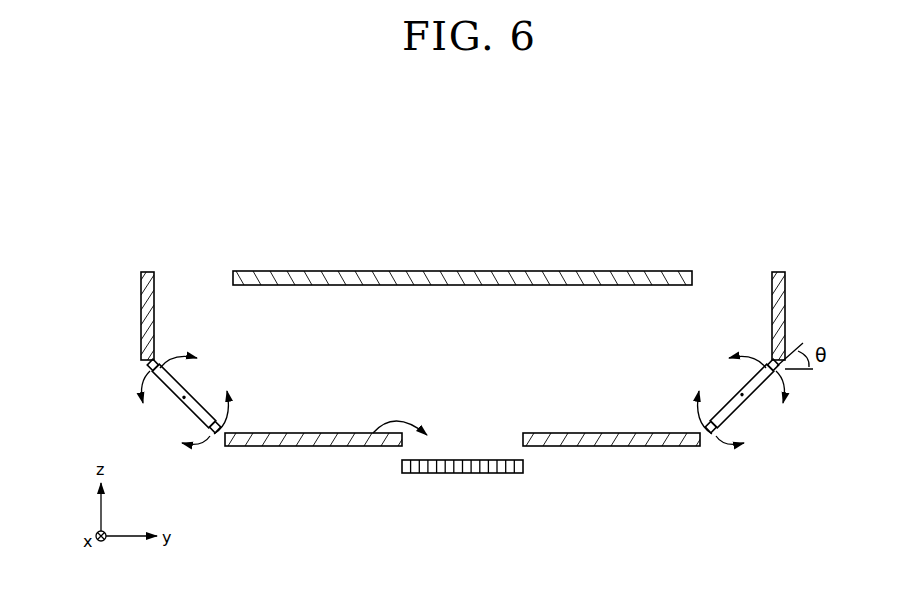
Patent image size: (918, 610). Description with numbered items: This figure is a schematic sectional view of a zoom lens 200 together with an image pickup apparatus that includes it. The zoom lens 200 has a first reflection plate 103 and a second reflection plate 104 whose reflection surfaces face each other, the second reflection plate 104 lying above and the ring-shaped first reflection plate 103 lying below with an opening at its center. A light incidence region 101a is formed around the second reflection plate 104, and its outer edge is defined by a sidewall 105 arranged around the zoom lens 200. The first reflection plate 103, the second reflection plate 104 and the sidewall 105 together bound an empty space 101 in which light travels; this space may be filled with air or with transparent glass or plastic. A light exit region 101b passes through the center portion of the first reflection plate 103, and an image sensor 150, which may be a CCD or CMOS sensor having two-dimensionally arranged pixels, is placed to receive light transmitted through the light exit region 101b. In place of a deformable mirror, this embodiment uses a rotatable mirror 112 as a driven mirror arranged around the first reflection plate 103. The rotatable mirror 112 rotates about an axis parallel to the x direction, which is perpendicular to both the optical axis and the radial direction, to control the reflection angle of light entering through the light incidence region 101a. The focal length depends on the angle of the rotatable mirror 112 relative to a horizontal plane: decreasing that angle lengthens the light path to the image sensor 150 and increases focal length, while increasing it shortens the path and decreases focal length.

The second reflection plate 104 is at (467, 280).
The sidewall 105 is at (785, 310).
The first reflection plate 103 is at (610, 446).
The empty space 101 is at (482, 347).
The light incidence region 101a is at (728, 278).
The light exit region 101b is at (378, 432).
The rotatable mirror 112 is at (757, 393).
The image sensor 150 is at (465, 475).
The zoom lens 200 is at (802, 192).